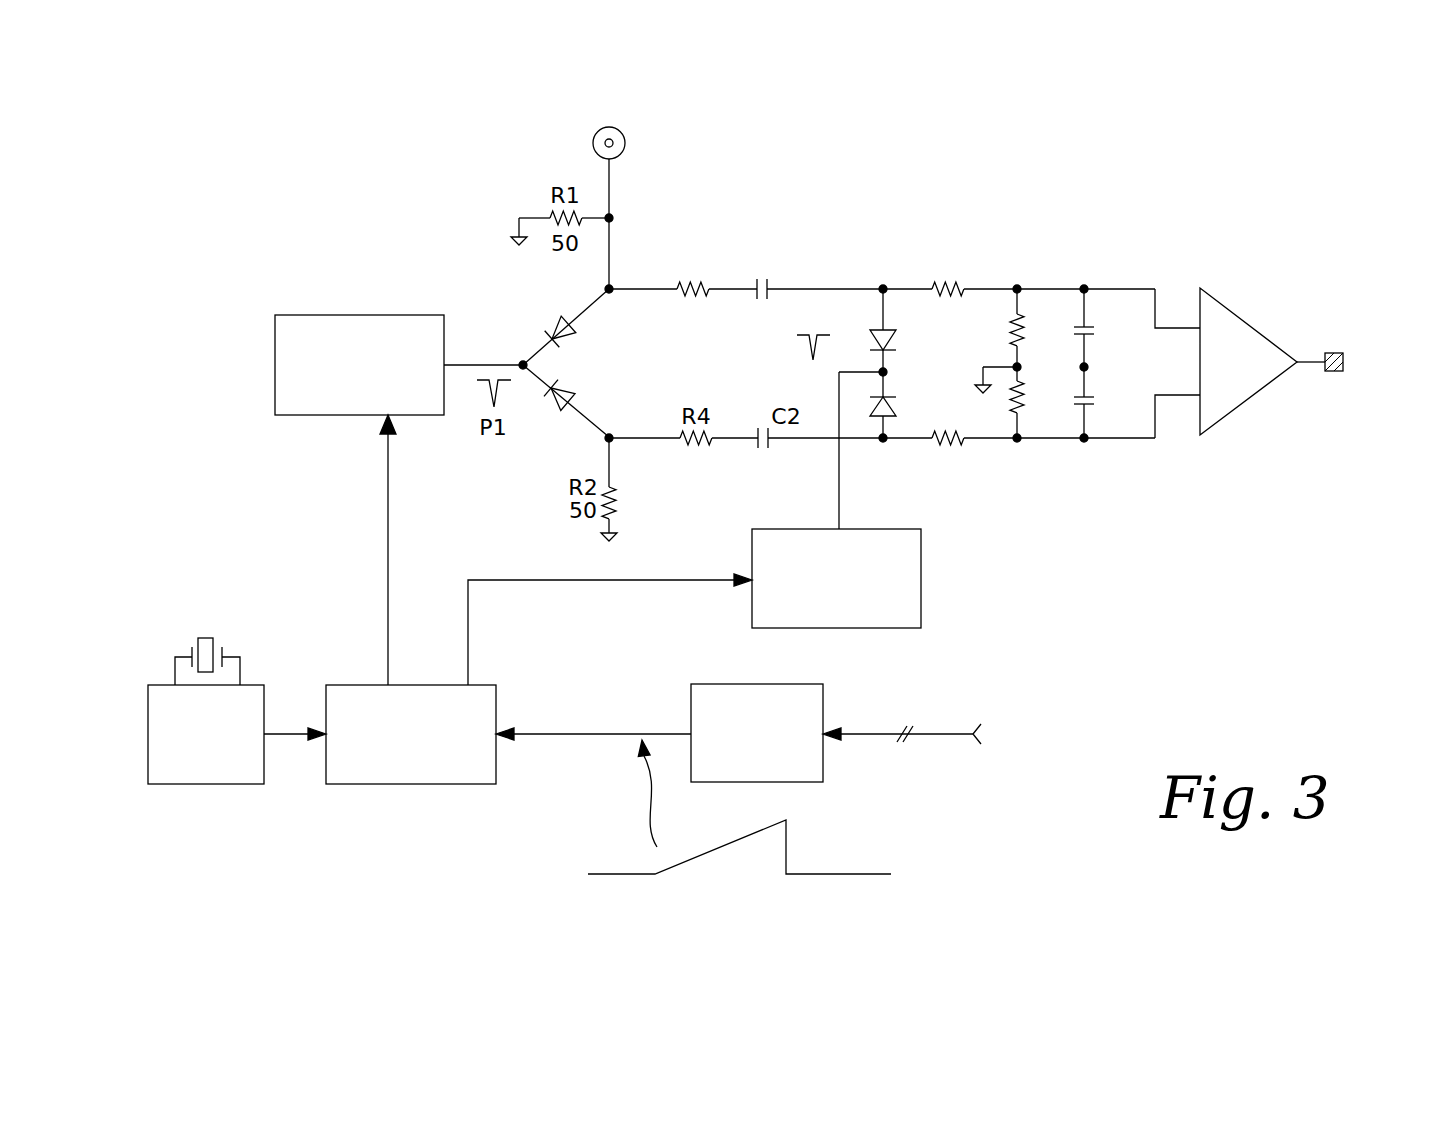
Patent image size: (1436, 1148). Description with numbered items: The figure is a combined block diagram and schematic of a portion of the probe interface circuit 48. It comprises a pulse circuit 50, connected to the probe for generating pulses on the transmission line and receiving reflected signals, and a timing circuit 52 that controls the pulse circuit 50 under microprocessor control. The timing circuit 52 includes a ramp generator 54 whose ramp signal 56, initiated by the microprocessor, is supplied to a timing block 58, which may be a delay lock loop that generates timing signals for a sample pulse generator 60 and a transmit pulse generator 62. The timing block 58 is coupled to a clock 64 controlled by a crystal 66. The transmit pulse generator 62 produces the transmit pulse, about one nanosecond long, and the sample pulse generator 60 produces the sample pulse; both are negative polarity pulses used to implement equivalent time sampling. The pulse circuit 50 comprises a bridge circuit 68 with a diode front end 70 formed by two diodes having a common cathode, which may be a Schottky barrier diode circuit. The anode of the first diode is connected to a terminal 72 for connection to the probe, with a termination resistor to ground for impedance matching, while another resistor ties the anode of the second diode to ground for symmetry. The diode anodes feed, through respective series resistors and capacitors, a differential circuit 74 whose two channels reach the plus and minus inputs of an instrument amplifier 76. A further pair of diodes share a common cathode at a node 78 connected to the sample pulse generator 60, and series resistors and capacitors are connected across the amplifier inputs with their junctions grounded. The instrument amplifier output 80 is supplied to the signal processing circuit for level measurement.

The probe interface circuit 48 is at (1167, 188).
The pulse circuit 50 is at (833, 260).
The timing circuit 52 is at (932, 590).
The ramp generator 54 is at (823, 695).
The ramp signal 56 is at (798, 851).
The timing block 58 is at (496, 693).
The sample pulse generator 60 is at (752, 606).
The transmit pulse generator 62 is at (437, 415).
The clock 64 is at (266, 695).
The crystal 66 is at (248, 610).
The bridge circuit 68 is at (713, 257).
The diode front end 70 is at (547, 315).
The terminal 72 is at (621, 154).
The differential circuit 74 is at (1027, 270).
The instrument amplifier 76 is at (1270, 330).
The node 78 is at (883, 372).
The instrument amplifier output 80 is at (1343, 353).